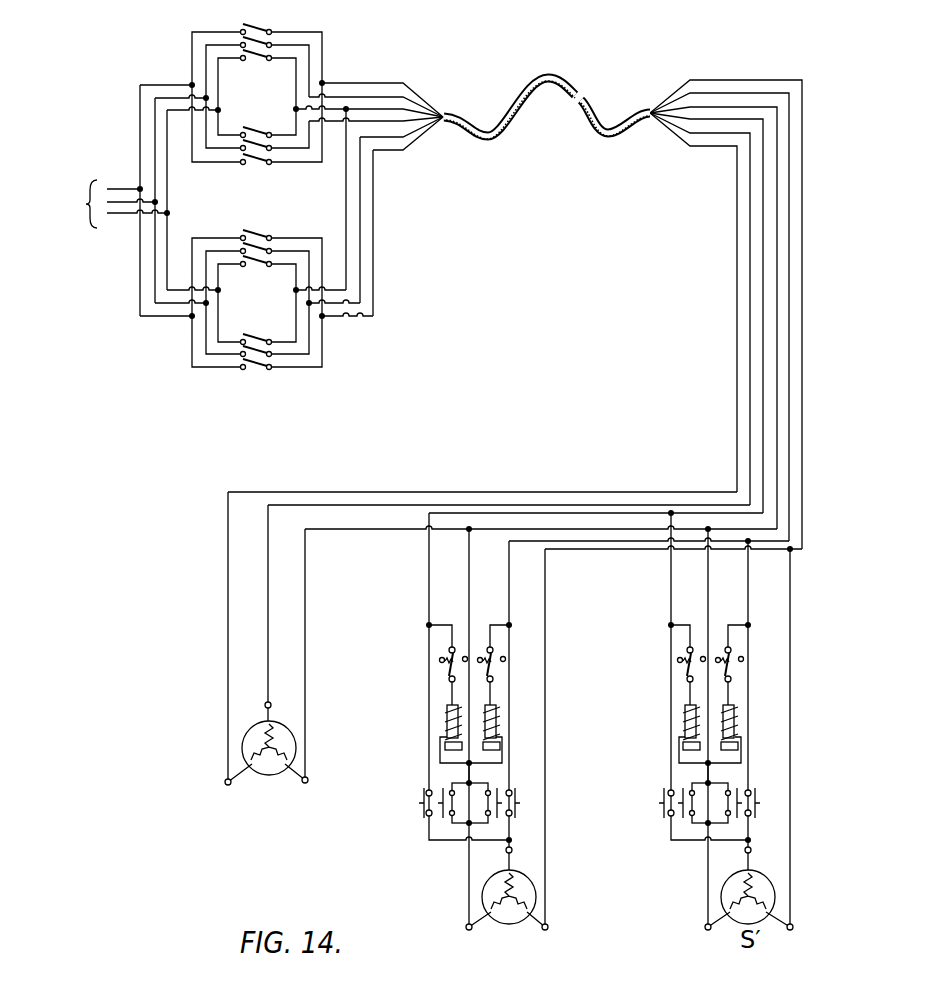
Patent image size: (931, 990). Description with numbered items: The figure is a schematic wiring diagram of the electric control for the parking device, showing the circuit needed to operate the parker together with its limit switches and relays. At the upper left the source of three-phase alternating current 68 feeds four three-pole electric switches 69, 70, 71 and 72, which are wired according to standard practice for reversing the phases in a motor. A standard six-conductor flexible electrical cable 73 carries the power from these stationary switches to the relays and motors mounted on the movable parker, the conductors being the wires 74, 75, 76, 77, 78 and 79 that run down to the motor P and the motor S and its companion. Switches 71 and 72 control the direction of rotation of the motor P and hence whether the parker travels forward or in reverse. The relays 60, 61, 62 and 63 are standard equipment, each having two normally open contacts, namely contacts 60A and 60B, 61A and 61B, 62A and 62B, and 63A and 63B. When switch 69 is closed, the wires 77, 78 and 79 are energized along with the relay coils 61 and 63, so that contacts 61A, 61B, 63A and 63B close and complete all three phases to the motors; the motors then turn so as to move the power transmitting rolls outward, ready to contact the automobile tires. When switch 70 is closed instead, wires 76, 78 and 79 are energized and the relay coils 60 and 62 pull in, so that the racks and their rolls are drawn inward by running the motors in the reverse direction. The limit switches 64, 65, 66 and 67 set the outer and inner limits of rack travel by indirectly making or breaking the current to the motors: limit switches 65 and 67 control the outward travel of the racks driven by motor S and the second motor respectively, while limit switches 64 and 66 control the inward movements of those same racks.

The relay 60 is at (442, 718).
The relay contact 60A is at (426, 815).
The relay contact 60B is at (429, 840).
The relay 61 is at (500, 718).
The relay contact 61A is at (520, 808).
The relay contact 61B is at (495, 790).
The relay 62 is at (681, 718).
The relay contact 62A is at (668, 812).
The relay contact 62B is at (690, 815).
The relay 63 is at (740, 718).
The relay contact 63A is at (758, 808).
The relay contact 63B is at (738, 786).
The limit switch 64 is at (450, 672).
The limit switch 65 is at (500, 668).
The limit switch 66 is at (688, 668).
The limit switch 67 is at (740, 668).
The source of 3-phase alternating current 68 is at (138, 200).
The 3-pole electric switch 69 is at (257, 55).
The 3-pole electric switch 70 is at (257, 124).
The 3-pole electric switch 71 is at (257, 263).
The 3-pole electric switch 72 is at (257, 330).
The 6-conductor flexible electrical cable 73 is at (562, 80).
The wire 74 is at (374, 186).
The wire 75 is at (361, 217).
The wire 76 is at (425, 132).
The wire 77 is at (420, 108).
The wire 78 is at (389, 97).
The wire 79 is at (363, 83).
The motor P is at (266, 767).
The motor S is at (507, 900).